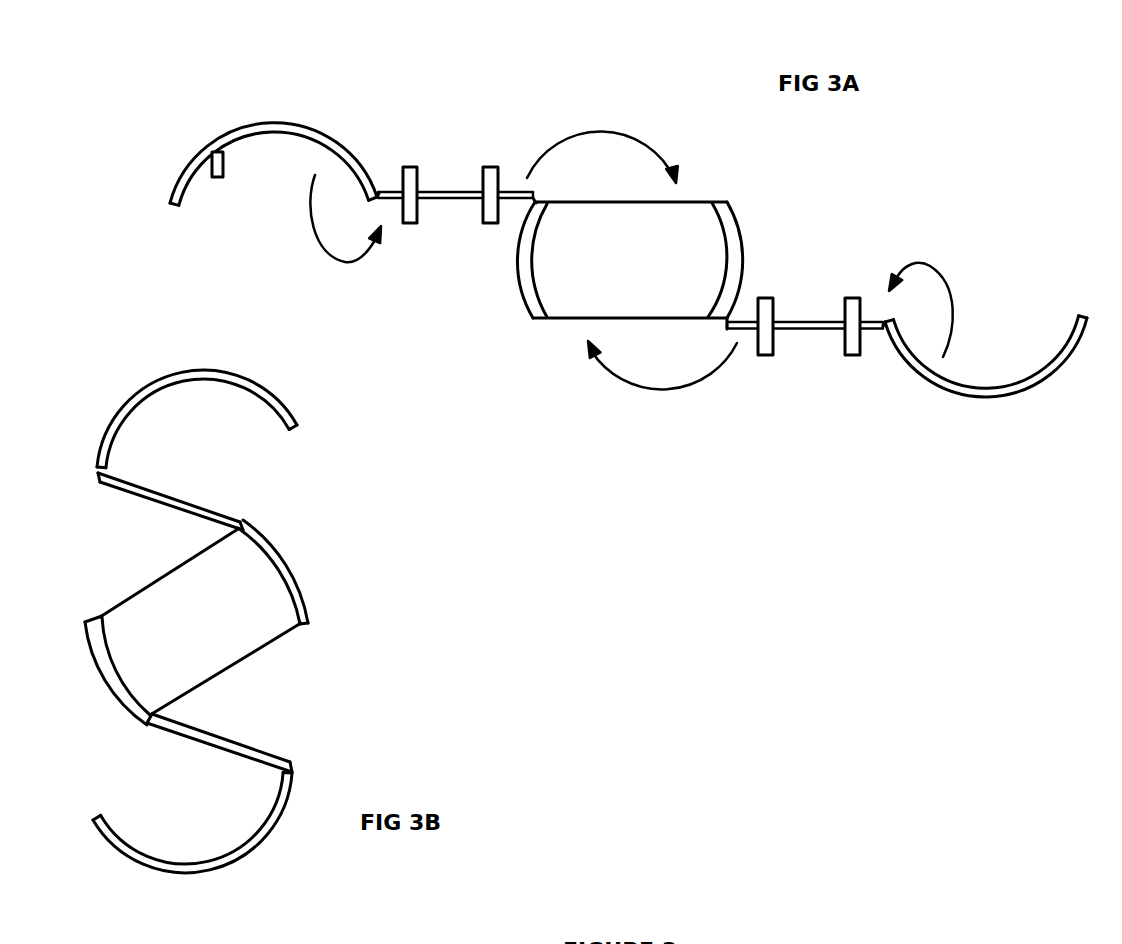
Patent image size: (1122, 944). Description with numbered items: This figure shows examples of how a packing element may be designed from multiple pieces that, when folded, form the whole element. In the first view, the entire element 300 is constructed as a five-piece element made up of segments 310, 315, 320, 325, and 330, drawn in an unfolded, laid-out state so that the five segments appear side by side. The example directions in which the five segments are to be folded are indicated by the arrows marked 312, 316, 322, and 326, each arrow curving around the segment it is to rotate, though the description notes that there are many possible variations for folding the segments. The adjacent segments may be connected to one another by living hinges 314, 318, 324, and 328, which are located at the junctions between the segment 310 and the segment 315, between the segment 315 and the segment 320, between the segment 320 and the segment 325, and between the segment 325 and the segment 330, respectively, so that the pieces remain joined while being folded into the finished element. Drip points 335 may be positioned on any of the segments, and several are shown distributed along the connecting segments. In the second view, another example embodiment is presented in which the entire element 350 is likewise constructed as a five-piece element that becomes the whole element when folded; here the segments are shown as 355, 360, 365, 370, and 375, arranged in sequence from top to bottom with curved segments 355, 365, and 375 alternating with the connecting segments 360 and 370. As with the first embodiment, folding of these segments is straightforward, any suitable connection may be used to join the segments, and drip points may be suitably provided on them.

In FIG. 3A, the element 300 is at (1010, 193).
In FIG. 3A, the segment 310 is at (222, 135).
In FIG. 3A, the arrow 312 is at (323, 253).
In FIG. 3A, the living hinge 314 is at (380, 187).
In FIG. 3A, the segment 315 is at (433, 187).
In FIG. 3A, the arrow 316 is at (642, 132).
In FIG. 3A, the living hinge 318 is at (522, 212).
In FIG. 3A, the segment 320 is at (738, 226).
In FIG. 3A, the arrow 322 is at (655, 397).
In FIG. 3A, the living hinge 324 is at (732, 313).
In FIG. 3A, the segment 325 is at (797, 315).
In FIG. 3A, the arrow 326 is at (950, 283).
In FIG. 3A, the living hinge 328 is at (882, 333).
In FIG. 3A, the segment 330 is at (983, 400).
In FIG. 3A, the drip points 335 is at (490, 160).
In FIG. 3B, the element 350 is at (394, 522).
In FIG. 3B, the segment 355 is at (155, 378).
In FIG. 3B, the segment 360 is at (140, 503).
In FIG. 3B, the segment 365 is at (308, 587).
In FIG. 3B, the segment 370 is at (238, 737).
In FIG. 3B, the segment 375 is at (123, 858).